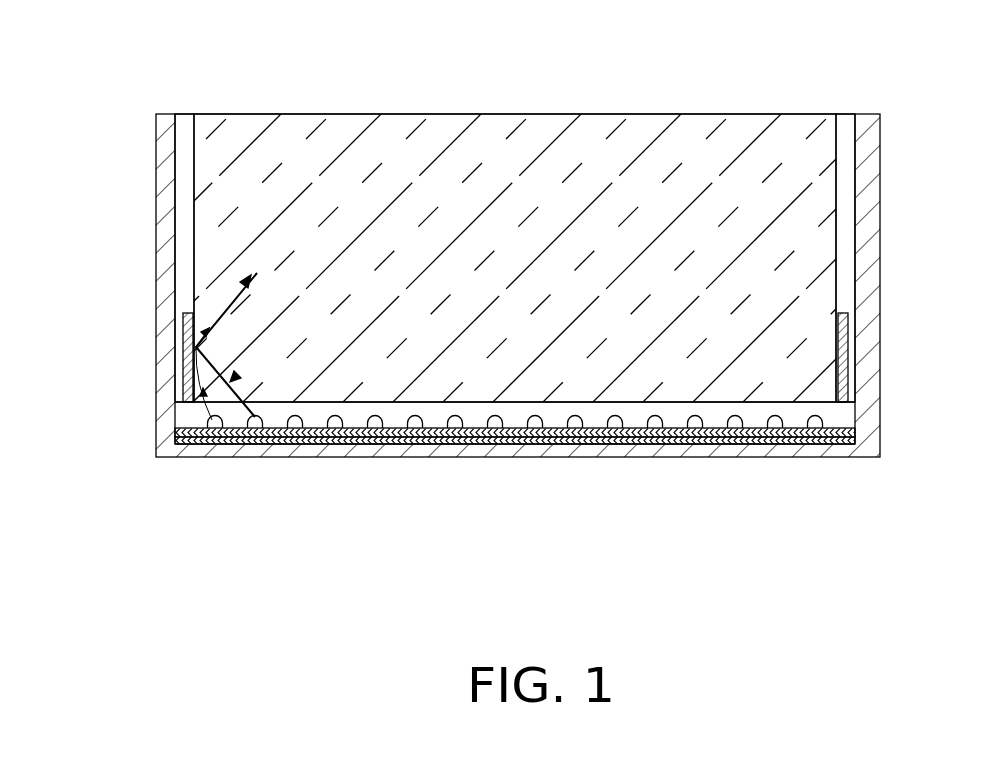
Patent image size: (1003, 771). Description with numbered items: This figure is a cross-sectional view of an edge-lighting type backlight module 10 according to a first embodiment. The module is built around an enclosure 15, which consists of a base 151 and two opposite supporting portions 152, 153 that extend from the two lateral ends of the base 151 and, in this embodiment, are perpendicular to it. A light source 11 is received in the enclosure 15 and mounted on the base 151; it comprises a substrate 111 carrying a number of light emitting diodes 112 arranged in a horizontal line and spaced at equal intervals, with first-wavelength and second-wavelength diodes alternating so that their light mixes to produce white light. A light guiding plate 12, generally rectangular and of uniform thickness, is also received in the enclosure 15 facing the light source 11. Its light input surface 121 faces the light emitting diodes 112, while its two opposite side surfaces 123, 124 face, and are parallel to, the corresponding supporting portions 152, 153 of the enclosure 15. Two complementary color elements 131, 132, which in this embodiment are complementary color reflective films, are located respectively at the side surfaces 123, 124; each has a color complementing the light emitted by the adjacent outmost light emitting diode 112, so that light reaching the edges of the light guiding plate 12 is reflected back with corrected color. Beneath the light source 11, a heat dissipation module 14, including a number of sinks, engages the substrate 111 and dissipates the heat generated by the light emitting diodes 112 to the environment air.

The edge-lighting type backlight module 10 is at (501, 278).
The light source 11 is at (515, 484).
The substrate 111 is at (577, 428).
The light emitting diodes 112 is at (615, 503).
The light guiding plate 12 is at (501, 275).
The light input surface 121 is at (838, 409).
The side surface 123 is at (195, 137).
The side surface 124 is at (838, 150).
The complementary color element 131 is at (188, 328).
The complementary color element 132 is at (845, 330).
The heat dissipation module 14 is at (372, 440).
The enclosure 15 is at (512, 311).
The base 151 is at (203, 445).
The supporting portion 152 is at (168, 403).
The supporting portion 153 is at (866, 430).